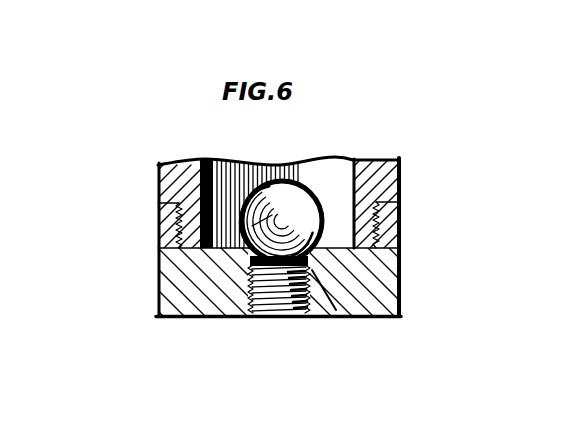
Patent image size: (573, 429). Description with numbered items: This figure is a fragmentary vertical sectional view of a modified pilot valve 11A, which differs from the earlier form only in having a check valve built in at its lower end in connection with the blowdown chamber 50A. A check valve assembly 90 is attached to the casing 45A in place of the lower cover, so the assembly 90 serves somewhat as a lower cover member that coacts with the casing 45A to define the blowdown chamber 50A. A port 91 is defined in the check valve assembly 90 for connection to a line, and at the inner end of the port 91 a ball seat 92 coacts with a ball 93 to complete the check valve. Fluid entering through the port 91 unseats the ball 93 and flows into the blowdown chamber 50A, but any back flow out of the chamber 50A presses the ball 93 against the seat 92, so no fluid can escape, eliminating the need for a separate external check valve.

The casing 45A is at (162, 190).
The blowdown chamber 50A is at (340, 203).
The modified pilot valve 11A is at (157, 228).
The check valve assembly 90 is at (157, 294).
The ball 93 is at (228, 249).
The port 91 is at (263, 314).
The ball seat 92 is at (340, 318).